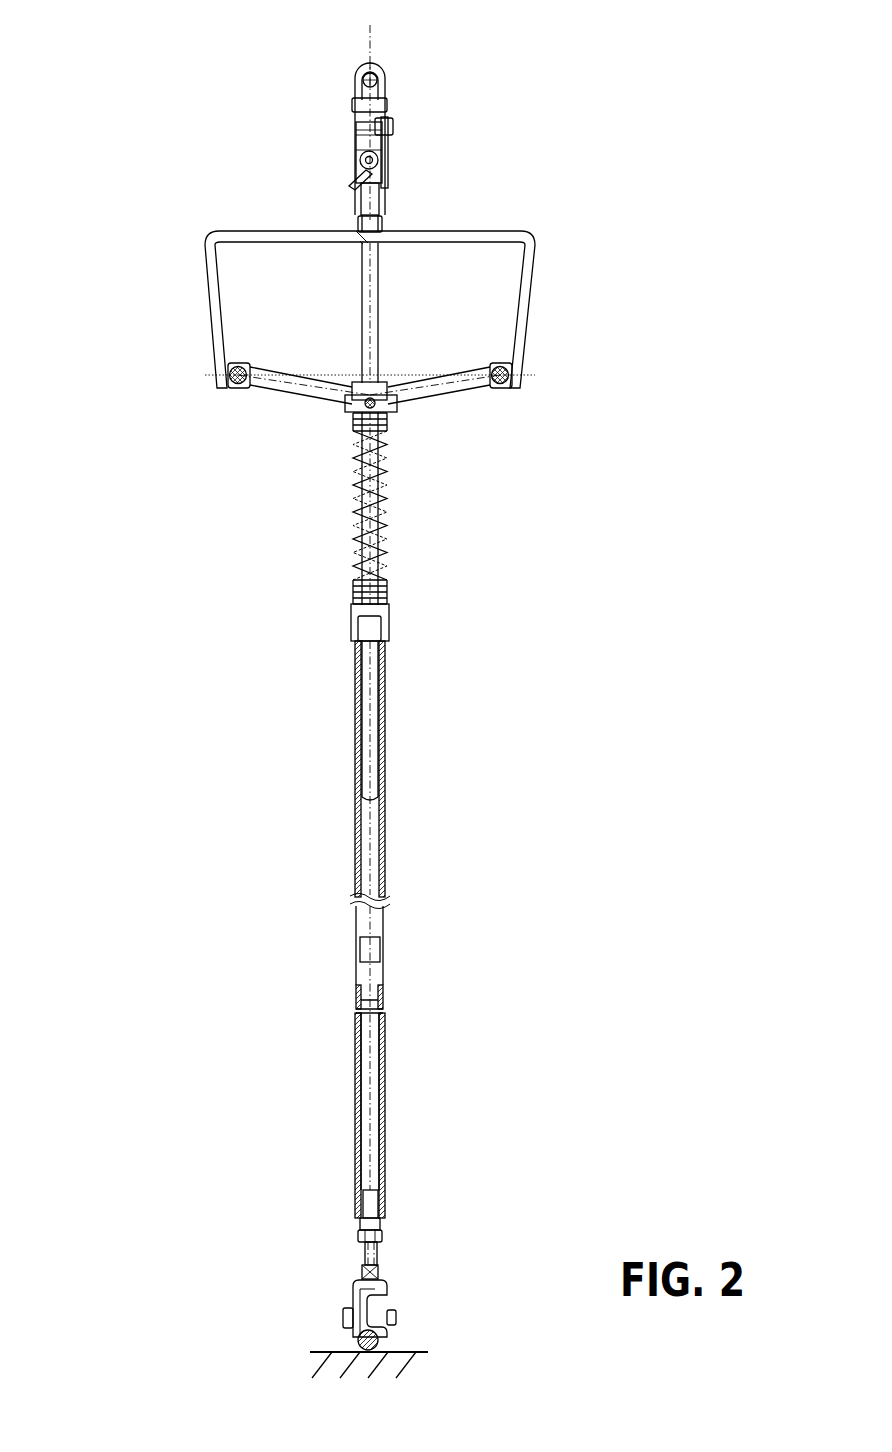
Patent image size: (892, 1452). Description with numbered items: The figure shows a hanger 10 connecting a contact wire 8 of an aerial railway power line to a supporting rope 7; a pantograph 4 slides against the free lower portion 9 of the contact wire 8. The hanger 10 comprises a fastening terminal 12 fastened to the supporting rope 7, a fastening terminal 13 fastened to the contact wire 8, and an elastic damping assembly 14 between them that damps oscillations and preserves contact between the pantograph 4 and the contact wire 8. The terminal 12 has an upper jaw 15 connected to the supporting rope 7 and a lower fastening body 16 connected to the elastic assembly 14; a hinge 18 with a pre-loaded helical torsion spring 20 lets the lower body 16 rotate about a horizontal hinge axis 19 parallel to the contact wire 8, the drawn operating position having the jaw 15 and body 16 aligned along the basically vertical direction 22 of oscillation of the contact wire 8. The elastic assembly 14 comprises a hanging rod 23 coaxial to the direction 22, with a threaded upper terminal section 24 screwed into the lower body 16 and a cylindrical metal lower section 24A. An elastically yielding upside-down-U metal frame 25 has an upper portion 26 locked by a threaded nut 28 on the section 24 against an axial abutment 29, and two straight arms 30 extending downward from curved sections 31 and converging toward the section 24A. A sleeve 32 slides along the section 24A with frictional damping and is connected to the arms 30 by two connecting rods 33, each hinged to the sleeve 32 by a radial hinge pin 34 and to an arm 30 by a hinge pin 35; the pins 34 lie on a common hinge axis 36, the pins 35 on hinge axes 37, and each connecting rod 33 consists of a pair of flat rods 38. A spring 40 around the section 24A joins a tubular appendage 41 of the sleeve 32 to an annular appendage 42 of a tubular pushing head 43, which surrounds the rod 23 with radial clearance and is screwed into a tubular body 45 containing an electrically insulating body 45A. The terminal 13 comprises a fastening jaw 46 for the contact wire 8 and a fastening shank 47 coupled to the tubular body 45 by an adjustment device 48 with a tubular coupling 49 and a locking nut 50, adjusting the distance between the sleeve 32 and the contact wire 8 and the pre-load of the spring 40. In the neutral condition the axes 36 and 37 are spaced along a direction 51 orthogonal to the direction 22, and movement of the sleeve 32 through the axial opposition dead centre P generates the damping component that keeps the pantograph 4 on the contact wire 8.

The pantograph 4 is at (410, 1352).
The supporting rope 7 is at (388, 82).
The contact wire 8 is at (350, 1340).
The free lower portion 9 is at (392, 1335).
The hanger 10 is at (600, 615).
The fastening terminal 12 is at (405, 124).
The fastening terminal 13 is at (395, 1255).
The elastic damping assembly 14 is at (545, 470).
The upper jaw 15 is at (358, 139).
The lower fastening body 16 is at (385, 195).
The hinge 18 is at (369, 151).
The hinge axis 19 is at (392, 150).
The helical torsion spring 20 is at (352, 180).
The vertical direction 22 is at (378, 46).
The hanging rod 23 is at (388, 262).
The upper terminal section 24 is at (377, 288).
The cylindrical lower section 24A is at (390, 518).
The metal frame 25 is at (575, 270).
The upper portion 26 is at (262, 231).
The threaded nut 28 is at (385, 232).
The axial abutment 29 is at (358, 240).
The straight arms 30 is at (210, 305).
The curved sections 31 is at (212, 238).
The sleeve 32 is at (377, 397).
The connecting rods 33 is at (372, 382).
The radial hinge pin 34 is at (352, 385).
The hinge pin 35 is at (375, 375).
The common hinge axis 36 is at (355, 433).
The hinge axes 37 is at (225, 388).
The flat rods 38 is at (265, 392).
The spring 40 is at (389, 508).
The cylindrical tubular appendage 41 is at (385, 410).
The cylindrical annular appendage 42 is at (386, 597).
The tubular pushing head 43 is at (350, 630).
The tubular body 45 is at (368, 929).
The electrically insulating body 45A is at (360, 975).
The fastening jaw 46 is at (364, 1294).
The fastening shank 47 is at (362, 1245).
The adjustment device 48 is at (385, 1235).
The tubular coupling 49 is at (385, 1210).
The locking nut 50 is at (361, 1213).
The direction 51 is at (372, 375).
The axial opposition dead centre P is at (370, 373).